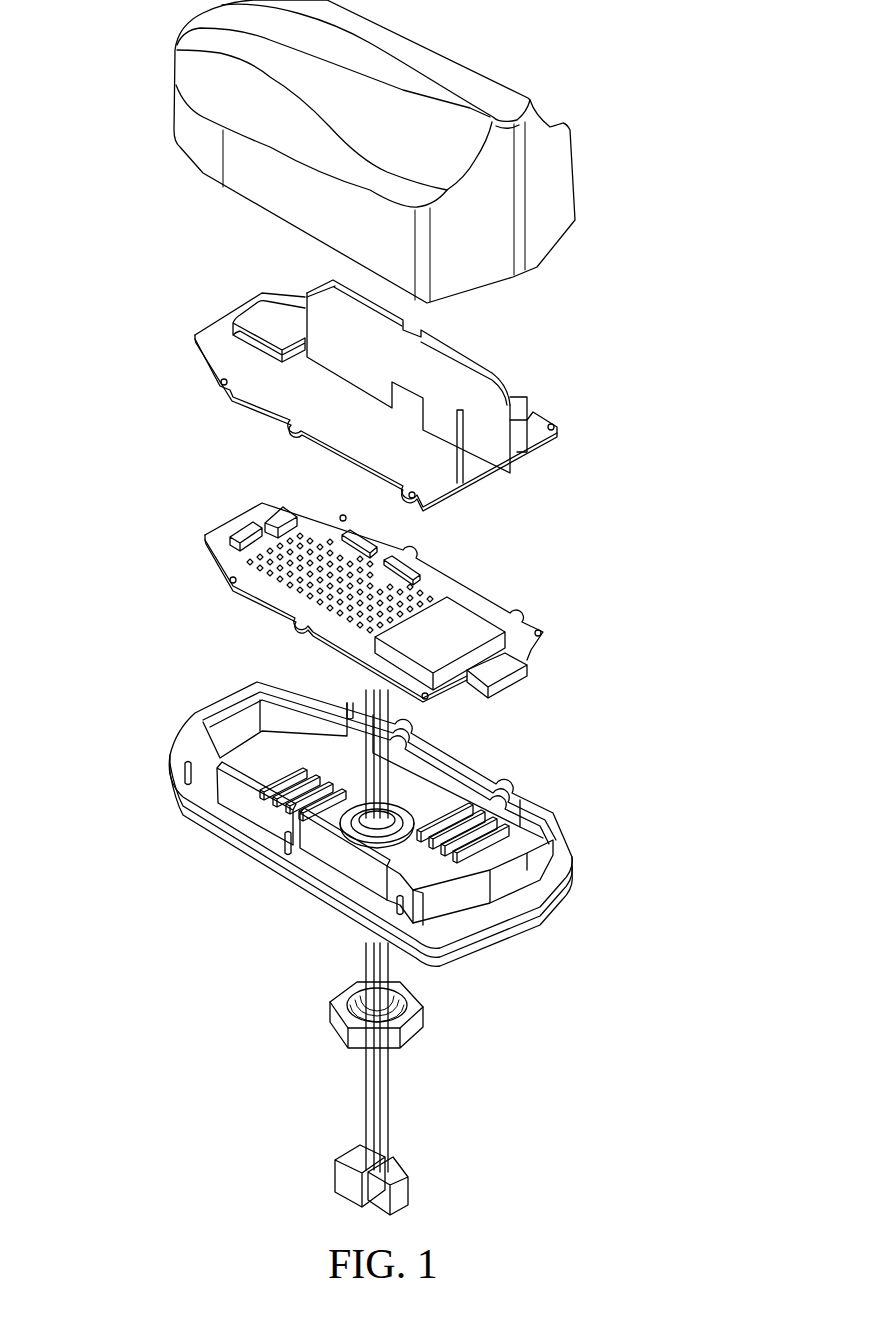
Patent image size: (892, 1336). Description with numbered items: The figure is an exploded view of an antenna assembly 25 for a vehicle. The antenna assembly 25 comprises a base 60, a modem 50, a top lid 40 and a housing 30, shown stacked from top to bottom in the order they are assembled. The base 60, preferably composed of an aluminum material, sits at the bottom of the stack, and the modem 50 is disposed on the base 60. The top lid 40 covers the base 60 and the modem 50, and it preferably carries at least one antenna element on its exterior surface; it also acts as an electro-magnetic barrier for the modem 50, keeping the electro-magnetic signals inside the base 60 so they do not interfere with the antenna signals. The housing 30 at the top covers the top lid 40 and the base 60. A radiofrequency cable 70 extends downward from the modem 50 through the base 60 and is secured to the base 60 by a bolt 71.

The antenna assembly 25 is at (653, 316).
The housing 30 is at (478, 63).
The top lid 40 is at (189, 293).
The modem 50 is at (189, 514).
The base 60 is at (181, 698).
The radiofrequency cable 70 is at (385, 1132).
The bolt 71 is at (413, 1003).